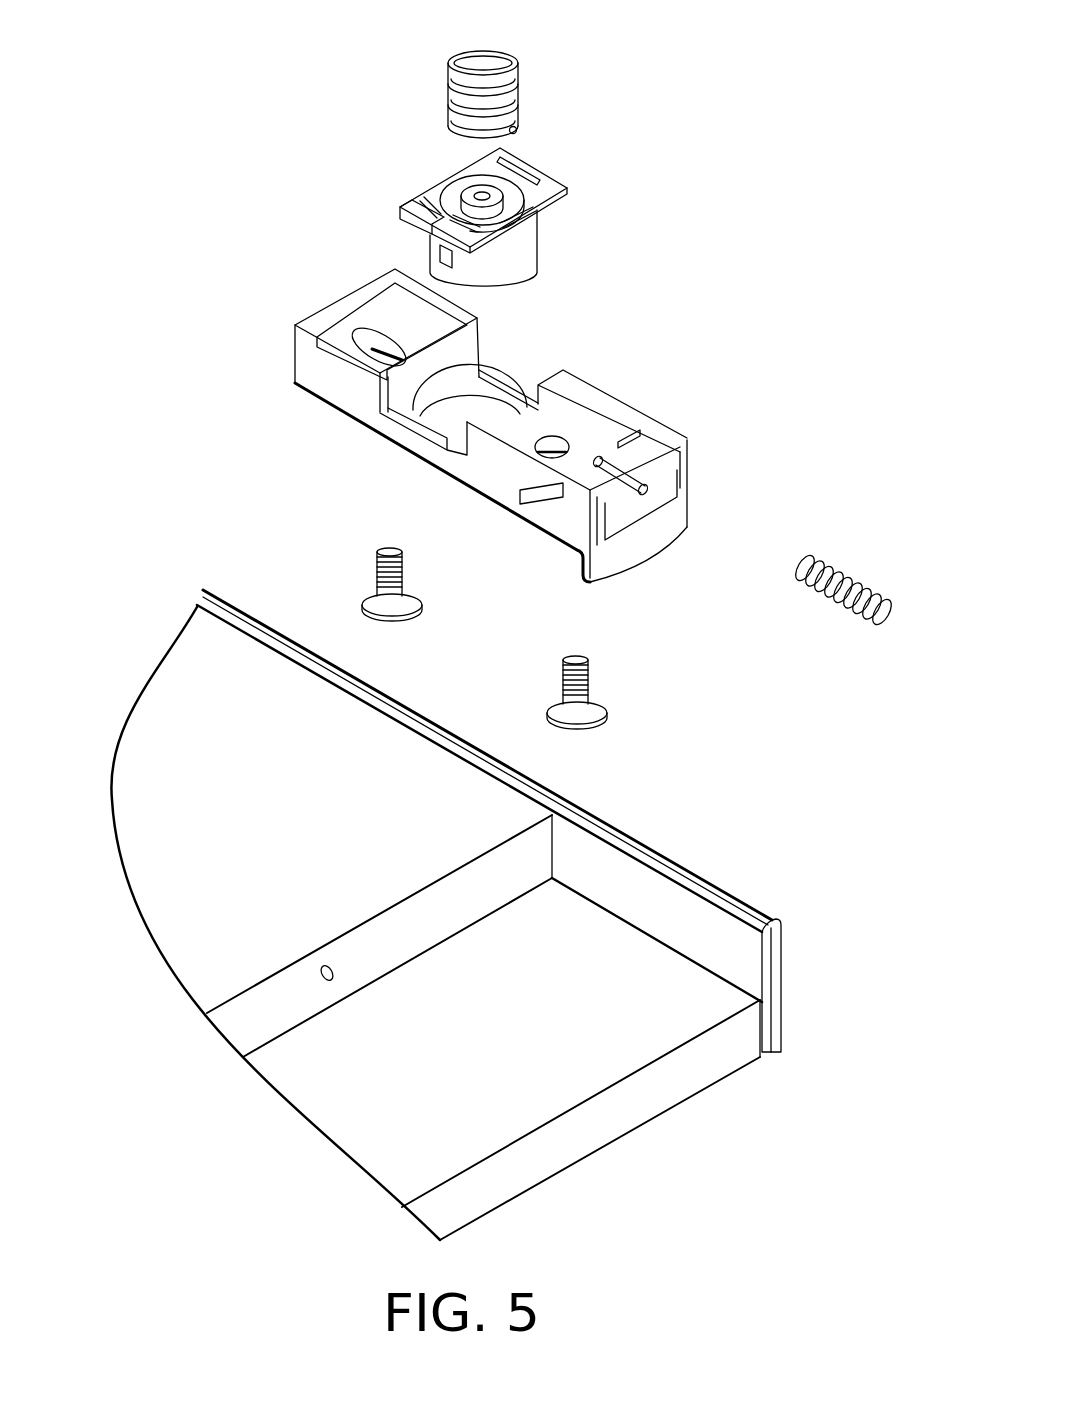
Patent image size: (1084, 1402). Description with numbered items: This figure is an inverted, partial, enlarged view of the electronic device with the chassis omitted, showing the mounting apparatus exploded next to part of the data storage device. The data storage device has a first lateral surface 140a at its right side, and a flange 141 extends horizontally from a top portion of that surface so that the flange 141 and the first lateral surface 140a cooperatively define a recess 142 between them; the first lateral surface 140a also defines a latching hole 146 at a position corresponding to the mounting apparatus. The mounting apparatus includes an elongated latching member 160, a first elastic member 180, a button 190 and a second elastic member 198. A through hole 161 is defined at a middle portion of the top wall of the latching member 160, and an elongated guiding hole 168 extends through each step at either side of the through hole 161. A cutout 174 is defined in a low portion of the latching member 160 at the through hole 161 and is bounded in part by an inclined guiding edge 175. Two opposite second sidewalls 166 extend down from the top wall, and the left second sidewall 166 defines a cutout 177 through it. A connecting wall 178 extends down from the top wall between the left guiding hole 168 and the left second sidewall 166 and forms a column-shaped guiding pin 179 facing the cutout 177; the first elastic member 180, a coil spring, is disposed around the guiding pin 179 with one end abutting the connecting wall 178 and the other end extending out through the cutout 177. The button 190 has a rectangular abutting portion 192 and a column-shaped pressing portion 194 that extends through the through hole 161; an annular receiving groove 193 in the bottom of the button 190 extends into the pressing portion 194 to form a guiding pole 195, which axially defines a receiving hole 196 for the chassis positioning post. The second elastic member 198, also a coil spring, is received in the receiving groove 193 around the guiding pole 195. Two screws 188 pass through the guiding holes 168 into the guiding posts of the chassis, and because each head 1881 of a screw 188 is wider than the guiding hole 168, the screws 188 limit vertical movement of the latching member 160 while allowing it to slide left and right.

The first lateral surface 140a is at (481, 915).
The flange 141 is at (755, 1055).
The recess 142 is at (570, 1048).
The latching hole 146 is at (330, 985).
The latching member 160 is at (493, 449).
The through hole 161 is at (440, 447).
The second sidewall 166 is at (690, 468).
The guiding hole 168 is at (370, 350).
The cutout 174 is at (515, 360).
The inclined guiding edge 175 is at (432, 413).
The cutout 177 is at (620, 525).
The connecting wall 178 is at (632, 425).
The guiding pin 179 is at (646, 492).
The first elastic member 180 is at (835, 580).
The screw 188 is at (414, 631).
The head 1881 is at (408, 625).
The button 190 is at (476, 155).
The abutting portion 192 is at (405, 207).
The annular receiving groove 193 is at (450, 195).
The pressing portion 194 is at (512, 250).
The guiding pole 195 is at (540, 180).
The receiving hole 196 is at (492, 190).
The second elastic member 198 is at (506, 62).